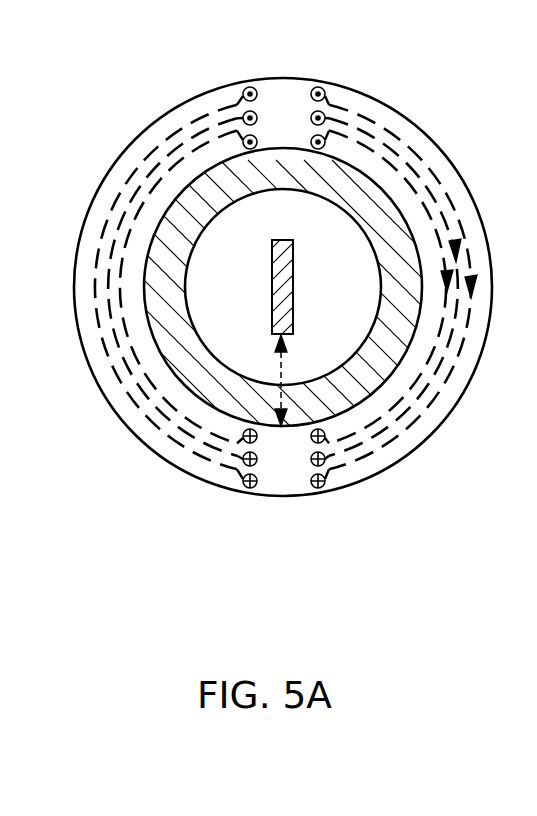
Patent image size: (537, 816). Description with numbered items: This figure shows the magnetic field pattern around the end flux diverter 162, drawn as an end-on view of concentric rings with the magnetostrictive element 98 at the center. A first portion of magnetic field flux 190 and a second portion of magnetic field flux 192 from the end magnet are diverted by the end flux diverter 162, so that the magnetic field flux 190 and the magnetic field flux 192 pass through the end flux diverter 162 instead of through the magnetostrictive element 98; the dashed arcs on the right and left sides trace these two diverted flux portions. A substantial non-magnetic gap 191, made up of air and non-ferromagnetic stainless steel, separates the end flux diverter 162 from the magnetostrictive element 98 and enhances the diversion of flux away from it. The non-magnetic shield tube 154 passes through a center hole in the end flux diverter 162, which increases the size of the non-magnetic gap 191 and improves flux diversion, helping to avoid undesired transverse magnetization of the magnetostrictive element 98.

The end flux diverter 162 is at (287, 78).
The non-magnetic shield tube 154 is at (196, 242).
The magnetostrictive element 98 is at (297, 297).
The non-magnetic gap 191 is at (266, 378).
The magnetic field flux (second portion) 192 is at (167, 92).
The magnetic field flux (first portion) 190 is at (406, 88).